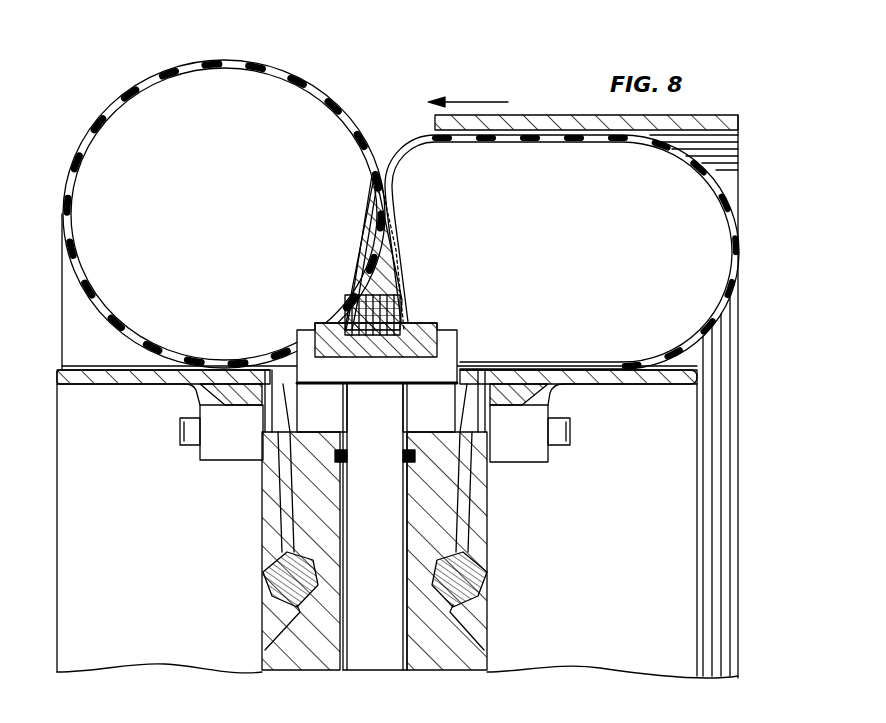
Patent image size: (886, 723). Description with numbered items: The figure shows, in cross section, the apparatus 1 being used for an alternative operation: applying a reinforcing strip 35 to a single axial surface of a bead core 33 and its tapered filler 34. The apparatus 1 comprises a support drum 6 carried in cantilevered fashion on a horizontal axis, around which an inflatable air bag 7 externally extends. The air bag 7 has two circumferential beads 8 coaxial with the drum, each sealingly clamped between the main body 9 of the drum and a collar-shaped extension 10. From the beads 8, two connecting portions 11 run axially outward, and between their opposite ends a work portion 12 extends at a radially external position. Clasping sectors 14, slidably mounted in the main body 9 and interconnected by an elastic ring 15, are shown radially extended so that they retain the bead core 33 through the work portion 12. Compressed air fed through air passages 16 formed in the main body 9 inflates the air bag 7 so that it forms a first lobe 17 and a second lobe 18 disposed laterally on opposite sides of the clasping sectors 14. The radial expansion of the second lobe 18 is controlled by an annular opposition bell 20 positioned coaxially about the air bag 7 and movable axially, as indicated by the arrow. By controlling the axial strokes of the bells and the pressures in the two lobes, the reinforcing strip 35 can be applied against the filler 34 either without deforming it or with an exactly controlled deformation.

The apparatus 1 is at (128, 683).
The support drum 6 is at (212, 672).
The inflatable air bag 7 is at (745, 250).
The circumferential beads 8 is at (256, 405).
The main body 9 is at (480, 550).
The collar-shaped extensions 10 is at (120, 386).
The connecting portions 11 is at (225, 365).
The work portion 12 is at (365, 195).
The clasping sectors 14 is at (447, 345).
The elastic ring 15 is at (420, 324).
The air passages 16 is at (290, 490).
The first lobe 17 is at (150, 95).
The second lobe 18 is at (520, 140).
The annular opposition bell 20 is at (575, 115).
The bead core 33 is at (360, 314).
The filler 34 is at (372, 240).
The reinforcing strip 35 is at (395, 235).